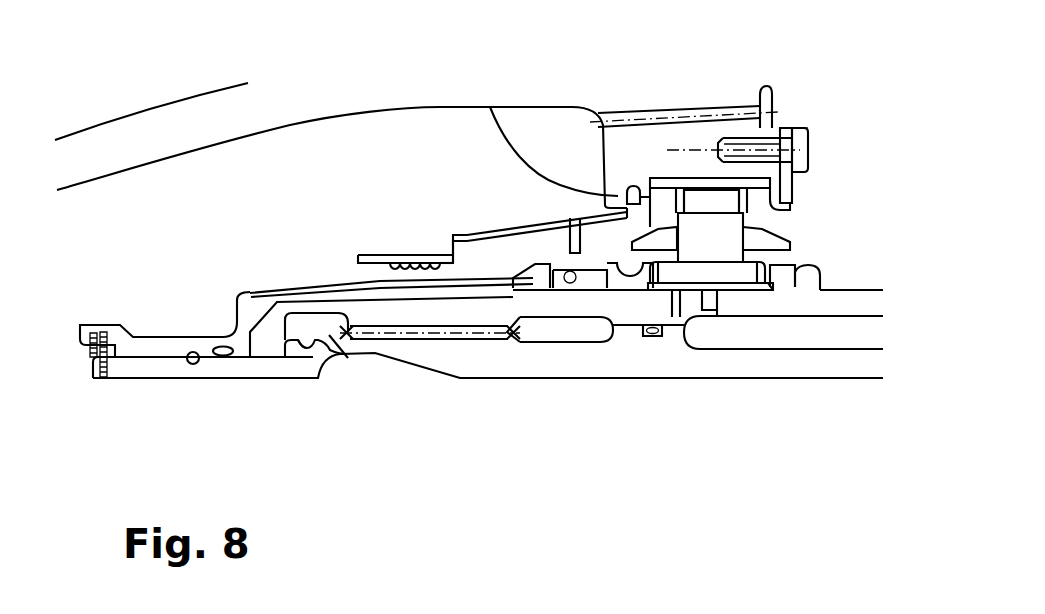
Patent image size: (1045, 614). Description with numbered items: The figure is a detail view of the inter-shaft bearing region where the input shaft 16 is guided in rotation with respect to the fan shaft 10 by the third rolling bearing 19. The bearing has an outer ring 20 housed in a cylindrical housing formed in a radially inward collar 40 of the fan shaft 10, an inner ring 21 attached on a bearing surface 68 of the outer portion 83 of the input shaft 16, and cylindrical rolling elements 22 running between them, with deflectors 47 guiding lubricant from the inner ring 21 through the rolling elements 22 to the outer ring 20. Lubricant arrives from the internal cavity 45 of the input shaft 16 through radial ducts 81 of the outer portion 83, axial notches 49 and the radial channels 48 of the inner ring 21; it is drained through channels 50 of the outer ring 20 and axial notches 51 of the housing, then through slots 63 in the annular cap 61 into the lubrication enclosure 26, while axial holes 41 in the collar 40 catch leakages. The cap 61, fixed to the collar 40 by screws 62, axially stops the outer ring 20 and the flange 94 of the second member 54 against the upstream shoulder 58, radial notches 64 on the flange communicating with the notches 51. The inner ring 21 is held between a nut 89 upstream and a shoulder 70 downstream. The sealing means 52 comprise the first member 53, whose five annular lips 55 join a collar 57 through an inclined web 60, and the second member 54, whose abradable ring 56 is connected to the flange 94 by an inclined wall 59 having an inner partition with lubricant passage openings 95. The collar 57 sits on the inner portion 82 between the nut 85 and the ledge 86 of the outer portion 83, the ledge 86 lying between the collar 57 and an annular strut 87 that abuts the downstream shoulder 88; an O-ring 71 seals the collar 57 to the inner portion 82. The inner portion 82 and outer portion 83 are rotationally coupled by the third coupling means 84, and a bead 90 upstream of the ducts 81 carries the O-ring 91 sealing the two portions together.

The fan shaft 10 is at (153, 162).
The input shaft 16 is at (823, 383).
The third rolling bearing 19 is at (893, 230).
The outer ring 20 is at (727, 200).
The inner ring 21 is at (733, 277).
The rolling elements 22 is at (752, 227).
The lubrication enclosure 26 is at (913, 101).
The collar 40 is at (560, 130).
The axial holes 41 is at (627, 110).
The internal cavity 45 is at (780, 348).
The deflectors 47 is at (790, 240).
The lubricant channels 48 is at (793, 267).
The axial notches 49 is at (665, 290).
The lubricant channels 50 is at (676, 190).
The axial notches 51 is at (683, 192).
The sealing means 52 is at (350, 237).
The first member 53 is at (247, 287).
The second member 54 is at (503, 222).
The annular lips 55 is at (402, 262).
The abradable ring 56 is at (420, 266).
The collar 57 is at (237, 353).
The upstream shoulder 58 is at (622, 190).
The annular inclined wall 59 is at (467, 262).
The annular inclined web 60 is at (270, 291).
The annular cap 61 is at (797, 123).
The screws 62 is at (803, 141).
The slots 63 is at (788, 180).
The radial notches 64 is at (542, 160).
The bearing surface 68 is at (783, 283).
The shoulder 70 is at (827, 285).
The sealing means 71 is at (227, 350).
The ducts 81 is at (672, 290).
The inner portion 82 is at (787, 360).
The outer portion 83 is at (850, 303).
The third coupling means 84 is at (405, 330).
The axial holding means 85 is at (157, 348).
The ledge 86 is at (268, 338).
The annular strut 87 is at (300, 350).
The downstream shoulder 88 is at (318, 346).
The axial holding means 89 is at (595, 283).
The bead 90 is at (627, 327).
The sealing means 91 is at (657, 337).
The flange 94 is at (610, 127).
The lubricant passage openings 95 is at (522, 192).